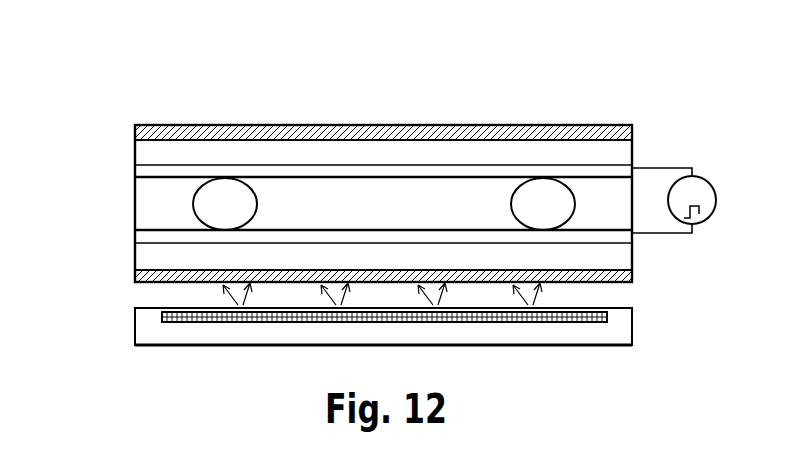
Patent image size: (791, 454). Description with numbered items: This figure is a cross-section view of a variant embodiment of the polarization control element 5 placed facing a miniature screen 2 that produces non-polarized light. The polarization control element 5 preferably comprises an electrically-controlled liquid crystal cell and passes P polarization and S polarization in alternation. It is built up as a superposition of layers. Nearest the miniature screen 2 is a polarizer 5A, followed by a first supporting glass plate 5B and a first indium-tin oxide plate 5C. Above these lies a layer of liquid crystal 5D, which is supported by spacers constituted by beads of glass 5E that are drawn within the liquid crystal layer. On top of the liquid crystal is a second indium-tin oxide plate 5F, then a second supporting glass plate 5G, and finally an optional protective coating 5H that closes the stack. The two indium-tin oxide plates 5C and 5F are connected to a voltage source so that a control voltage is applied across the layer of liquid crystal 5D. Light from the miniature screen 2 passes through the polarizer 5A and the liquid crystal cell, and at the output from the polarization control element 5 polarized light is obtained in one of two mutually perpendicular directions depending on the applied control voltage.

The polarization control element 5 is at (128, 113).
The polarizer 5A is at (146, 276).
The first supporting glass plate 5B is at (146, 264).
The first indium-tin oxide plate 5C is at (146, 237).
The layer of liquid crystal 5D is at (148, 208).
The beads of glass 5E is at (384, 204).
The second indium-tin oxide plate 5F is at (146, 173).
The second supporting glass plate 5G is at (146, 151).
The protective coating 5H is at (212, 128).
The miniature screen 2 is at (135, 358).